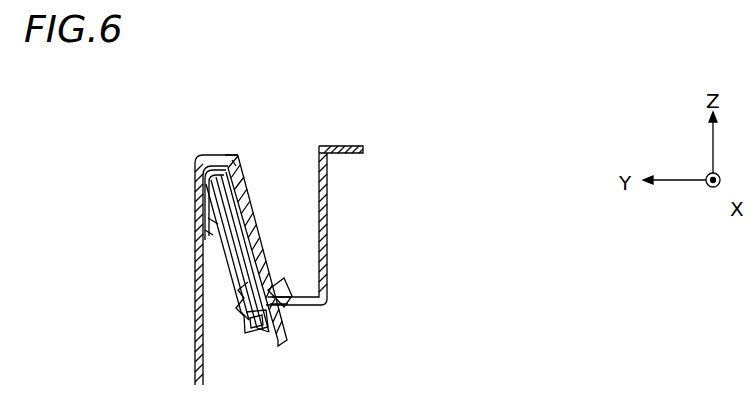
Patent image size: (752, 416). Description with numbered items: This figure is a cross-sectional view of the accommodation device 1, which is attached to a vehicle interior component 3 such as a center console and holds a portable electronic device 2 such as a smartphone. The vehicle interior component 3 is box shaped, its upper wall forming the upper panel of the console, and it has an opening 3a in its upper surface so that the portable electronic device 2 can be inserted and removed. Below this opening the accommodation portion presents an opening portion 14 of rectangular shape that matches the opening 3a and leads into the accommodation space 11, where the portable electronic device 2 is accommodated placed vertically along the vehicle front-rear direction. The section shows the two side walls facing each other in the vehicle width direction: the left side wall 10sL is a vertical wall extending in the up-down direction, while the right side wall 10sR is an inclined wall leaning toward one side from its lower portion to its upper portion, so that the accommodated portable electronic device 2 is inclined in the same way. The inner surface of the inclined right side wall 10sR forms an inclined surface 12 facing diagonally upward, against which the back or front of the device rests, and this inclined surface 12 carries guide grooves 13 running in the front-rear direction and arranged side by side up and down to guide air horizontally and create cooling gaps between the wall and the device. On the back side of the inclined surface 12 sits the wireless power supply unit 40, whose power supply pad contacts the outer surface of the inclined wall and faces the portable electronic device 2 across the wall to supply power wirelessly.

The accommodation device 1 is at (409, 193).
The portable electronic device 2 is at (252, 215).
The vehicle interior component 3 is at (352, 147).
The opening 3a is at (323, 153).
The accommodation space 11 is at (283, 170).
The inclined surface 12 is at (278, 258).
The guide groove 13 is at (268, 290).
The opening portion 14 is at (318, 156).
The wireless power supply unit 40 is at (249, 336).
The left side wall 10sL is at (327, 190).
The right side wall 10sR is at (200, 183).